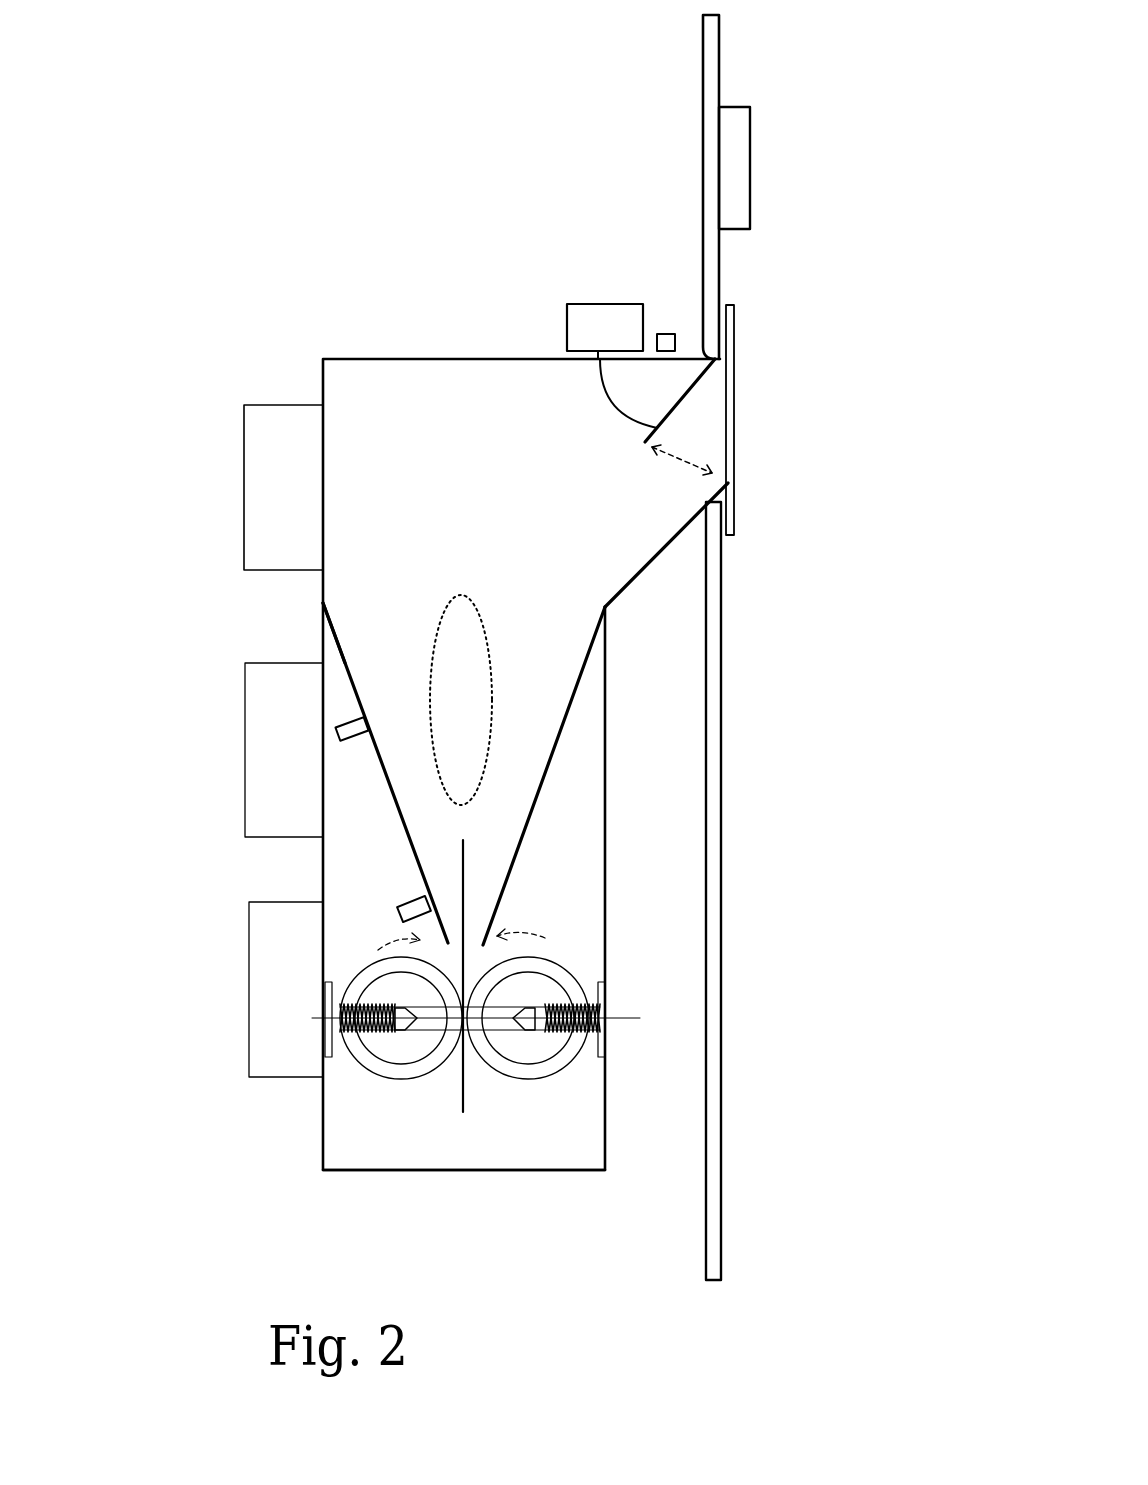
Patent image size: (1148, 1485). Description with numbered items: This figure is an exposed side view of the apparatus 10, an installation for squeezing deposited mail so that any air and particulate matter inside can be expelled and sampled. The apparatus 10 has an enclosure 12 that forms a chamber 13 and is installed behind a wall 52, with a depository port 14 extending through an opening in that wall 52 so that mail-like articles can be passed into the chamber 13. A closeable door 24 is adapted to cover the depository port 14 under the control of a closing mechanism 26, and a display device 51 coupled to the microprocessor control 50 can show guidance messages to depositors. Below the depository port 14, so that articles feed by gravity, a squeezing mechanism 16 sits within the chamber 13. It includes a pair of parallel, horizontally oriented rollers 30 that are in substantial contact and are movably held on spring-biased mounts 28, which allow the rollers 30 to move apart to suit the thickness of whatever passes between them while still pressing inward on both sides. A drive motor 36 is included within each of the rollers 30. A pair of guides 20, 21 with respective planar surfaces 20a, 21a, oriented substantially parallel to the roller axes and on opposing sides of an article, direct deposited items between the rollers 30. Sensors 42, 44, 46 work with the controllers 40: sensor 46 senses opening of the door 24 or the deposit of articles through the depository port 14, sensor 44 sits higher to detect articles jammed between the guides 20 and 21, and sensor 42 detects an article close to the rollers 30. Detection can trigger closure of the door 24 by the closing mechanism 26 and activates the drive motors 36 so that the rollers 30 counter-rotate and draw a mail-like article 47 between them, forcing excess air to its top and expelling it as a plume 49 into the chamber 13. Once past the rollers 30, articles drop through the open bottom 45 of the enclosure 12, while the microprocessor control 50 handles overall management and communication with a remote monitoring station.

The apparatus 10 is at (292, 292).
The enclosure 12 is at (402, 368).
The chamber 13 is at (460, 495).
The depository port 14 is at (797, 411).
The squeezing mechanism 16 is at (478, 1085).
The guide 20 is at (555, 735).
The planar surface 20a is at (592, 635).
The guide 21 is at (350, 683).
The planar surface 21a is at (340, 640).
The closeable door 24 is at (687, 388).
The closing mechanism 26 is at (583, 322).
The mounts 28 is at (363, 1012).
The rollers 30 is at (355, 1053).
The drive motor 36 is at (538, 975).
The controllers 40 is at (260, 805).
The sensor 42 is at (413, 897).
The sensor 44 is at (353, 733).
The open bottom 45 is at (355, 1159).
The sensor 46 is at (675, 333).
The mail-like article 47 is at (480, 878).
The plume 49 is at (470, 652).
The microprocessor control 50 is at (282, 430).
The display device 51 is at (750, 158).
The wall 52 is at (707, 928).